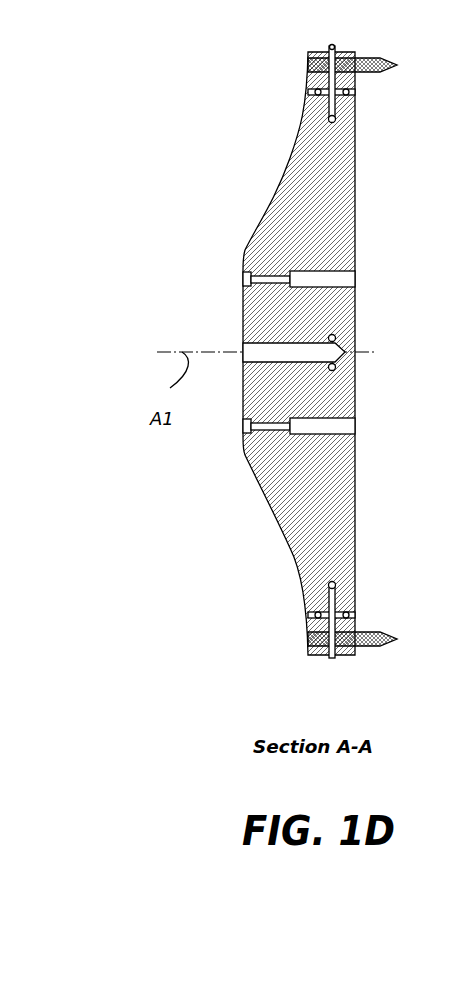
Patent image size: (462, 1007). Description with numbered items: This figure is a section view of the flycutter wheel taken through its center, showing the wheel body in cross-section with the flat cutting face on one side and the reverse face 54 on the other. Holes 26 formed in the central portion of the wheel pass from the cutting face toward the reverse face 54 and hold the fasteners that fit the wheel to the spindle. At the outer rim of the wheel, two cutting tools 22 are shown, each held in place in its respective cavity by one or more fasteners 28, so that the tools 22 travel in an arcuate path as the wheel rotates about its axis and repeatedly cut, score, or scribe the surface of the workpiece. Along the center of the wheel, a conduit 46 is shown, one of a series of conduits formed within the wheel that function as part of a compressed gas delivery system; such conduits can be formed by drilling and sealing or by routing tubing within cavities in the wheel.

The cutting tool 22 is at (382, 73).
The holes 26 is at (242, 279).
The fasteners 28 is at (332, 49).
The conduit 46 is at (243, 343).
The reverse face 54 is at (253, 253).